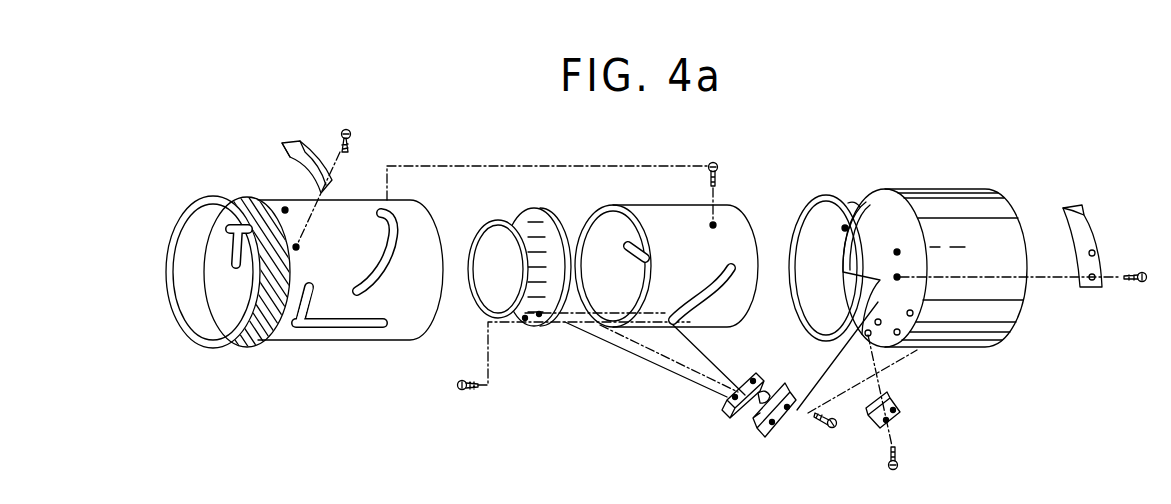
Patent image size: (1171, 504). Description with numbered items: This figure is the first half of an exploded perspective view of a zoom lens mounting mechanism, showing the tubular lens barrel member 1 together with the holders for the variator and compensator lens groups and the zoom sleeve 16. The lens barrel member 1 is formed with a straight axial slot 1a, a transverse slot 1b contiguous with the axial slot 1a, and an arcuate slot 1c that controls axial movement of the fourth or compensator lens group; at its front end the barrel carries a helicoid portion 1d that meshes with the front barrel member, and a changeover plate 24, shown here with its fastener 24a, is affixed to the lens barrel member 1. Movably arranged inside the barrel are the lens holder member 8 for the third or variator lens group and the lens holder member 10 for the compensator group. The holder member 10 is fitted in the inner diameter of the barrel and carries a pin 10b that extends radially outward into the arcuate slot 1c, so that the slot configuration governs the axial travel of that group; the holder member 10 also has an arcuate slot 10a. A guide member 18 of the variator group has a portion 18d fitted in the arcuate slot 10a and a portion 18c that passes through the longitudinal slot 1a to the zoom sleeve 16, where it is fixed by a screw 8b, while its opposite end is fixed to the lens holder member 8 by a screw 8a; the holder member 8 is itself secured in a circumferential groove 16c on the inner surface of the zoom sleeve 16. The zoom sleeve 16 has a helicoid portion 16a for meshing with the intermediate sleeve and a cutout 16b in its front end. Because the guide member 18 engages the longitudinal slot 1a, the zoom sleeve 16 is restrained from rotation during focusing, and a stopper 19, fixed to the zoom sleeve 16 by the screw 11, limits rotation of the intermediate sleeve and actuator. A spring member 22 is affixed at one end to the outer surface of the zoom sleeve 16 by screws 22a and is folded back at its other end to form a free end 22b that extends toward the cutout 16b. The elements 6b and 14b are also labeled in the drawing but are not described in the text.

The lens barrel member 1 is at (279, 272).
The straight axial slot 1a is at (328, 324).
The transverse slot 1b is at (308, 289).
The arcuate slot 1c is at (397, 219).
The helicoid portion 1d is at (245, 347).
The changeover plate 24 is at (307, 155).
The screw for cover plate 24a is at (350, 131).
The lens holder member 8 is at (550, 217).
The screw 8a is at (460, 392).
The screw 8b is at (832, 430).
The lens holder member 10 is at (679, 257).
The arcuate slot 10a is at (737, 316).
The pin 10b is at (718, 165).
The zoom sleeve 16 is at (908, 269).
The helicoid portion 16a is at (913, 300).
The cutout 16b is at (863, 237).
The circumferential groove 16c is at (835, 247).
The guide member 18 is at (783, 425).
The portion of guide member 18c is at (752, 418).
The portion of guide member 18d is at (765, 393).
The stopper 19 is at (900, 413).
The screw 11 is at (898, 463).
The spring member 22 is at (1090, 225).
The screws 22a is at (1143, 283).
The free end 22b is at (1070, 208).
The element 6b is at (772, 495).
The element 14b is at (854, 495).